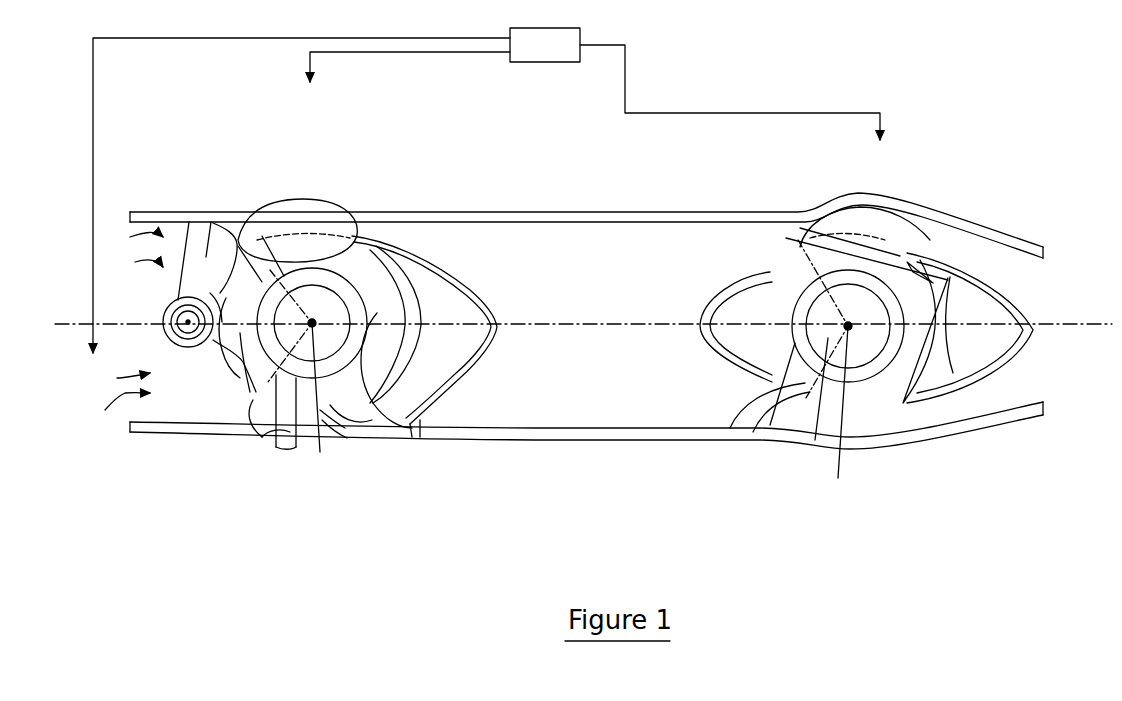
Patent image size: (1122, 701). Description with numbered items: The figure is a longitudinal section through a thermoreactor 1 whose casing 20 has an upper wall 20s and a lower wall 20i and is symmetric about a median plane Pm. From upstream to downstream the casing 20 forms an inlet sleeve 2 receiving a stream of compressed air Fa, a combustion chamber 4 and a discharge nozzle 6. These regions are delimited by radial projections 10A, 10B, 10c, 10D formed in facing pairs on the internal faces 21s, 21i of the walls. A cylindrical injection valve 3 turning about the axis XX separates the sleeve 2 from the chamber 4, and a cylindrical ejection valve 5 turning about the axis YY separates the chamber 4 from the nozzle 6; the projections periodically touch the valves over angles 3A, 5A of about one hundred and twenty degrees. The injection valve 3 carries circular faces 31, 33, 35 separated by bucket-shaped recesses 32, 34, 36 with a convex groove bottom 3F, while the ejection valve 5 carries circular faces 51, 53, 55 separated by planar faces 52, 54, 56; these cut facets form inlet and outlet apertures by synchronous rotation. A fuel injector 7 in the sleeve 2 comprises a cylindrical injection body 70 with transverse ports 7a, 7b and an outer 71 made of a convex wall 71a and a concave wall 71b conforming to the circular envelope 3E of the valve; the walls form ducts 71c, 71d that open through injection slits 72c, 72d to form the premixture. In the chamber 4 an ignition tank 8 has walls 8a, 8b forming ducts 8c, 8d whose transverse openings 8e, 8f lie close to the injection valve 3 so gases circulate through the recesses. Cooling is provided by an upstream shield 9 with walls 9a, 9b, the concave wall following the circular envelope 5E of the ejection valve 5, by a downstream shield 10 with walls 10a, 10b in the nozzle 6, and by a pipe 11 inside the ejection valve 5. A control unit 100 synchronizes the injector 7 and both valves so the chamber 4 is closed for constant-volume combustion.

The thermoreactor 1 is at (778, 96).
The inlet sleeve 2 is at (113, 216).
The injection valve 3 is at (297, 289).
The angle subtended by injection valve 3A is at (276, 281).
The circular envelope of injection valve 3E is at (252, 440).
The groove bottom 3F is at (331, 239).
The combustion chamber 4 is at (548, 405).
The ejection valve 5 is at (832, 323).
The angle subtended by ejection valve 5A is at (812, 288).
The circular envelope of ejection valve 5E is at (745, 428).
The discharge nozzle 6 is at (966, 246).
The fuel injector 7 is at (149, 325).
The transverse port 7a is at (176, 306).
The transverse port 7b is at (166, 334).
The ignition tank 8 is at (420, 288).
The tank wall 8a is at (458, 263).
The tank wall 8b is at (497, 262).
The tank duct 8c is at (415, 282).
The tank duct 8d is at (405, 412).
The transverse opening 8e is at (375, 244).
The transverse opening 8f is at (373, 404).
The upstream shield 9 is at (714, 337).
The shield wall 9a is at (700, 336).
The shield wall 9b is at (745, 316).
The downstream shield 10 is at (1023, 404).
The radial projection 10A is at (260, 216).
The radial projection 10B is at (264, 422).
The radial projection 10D is at (800, 422).
The shield wall 10a is at (960, 347).
The shield wall 10b is at (1034, 338).
The radial projection 10c is at (872, 243).
The cooling pipe 11 is at (910, 395).
The casing 20 is at (586, 318).
The upper wall 20s is at (685, 212).
The lower wall 20i is at (648, 442).
The internal face of upper wall 21s is at (540, 226).
The internal face of lower wall 21i is at (492, 426).
The circular face 31 is at (254, 236).
The recess 32 is at (356, 242).
The circular face 33 is at (384, 255).
The recess 34 is at (428, 428).
The circular face 35 is at (344, 432).
The recess 36 is at (238, 424).
The circular face 51 is at (772, 258).
The planar face 52 is at (905, 250).
The circular face 53 is at (954, 289).
The planar face 54 is at (880, 342).
The circular face 55 is at (822, 440).
The planar face 56 is at (714, 430).
The injection body 70 is at (133, 397).
The outer 71 is at (217, 220).
The convex wall 71a is at (190, 217).
The concave wall 71b is at (212, 217).
The duct 71c is at (194, 300).
The duct 71d is at (190, 348).
The injection slit 72c is at (231, 306).
The injection slit 72d is at (244, 376).
The control unit 100 is at (530, 55).
The stream of compressed air Fa is at (160, 216).
The median plane Pm is at (1100, 324).
The axis of rotation X'X XX is at (320, 398).
The axis of rotation Y'Y YY is at (838, 413).